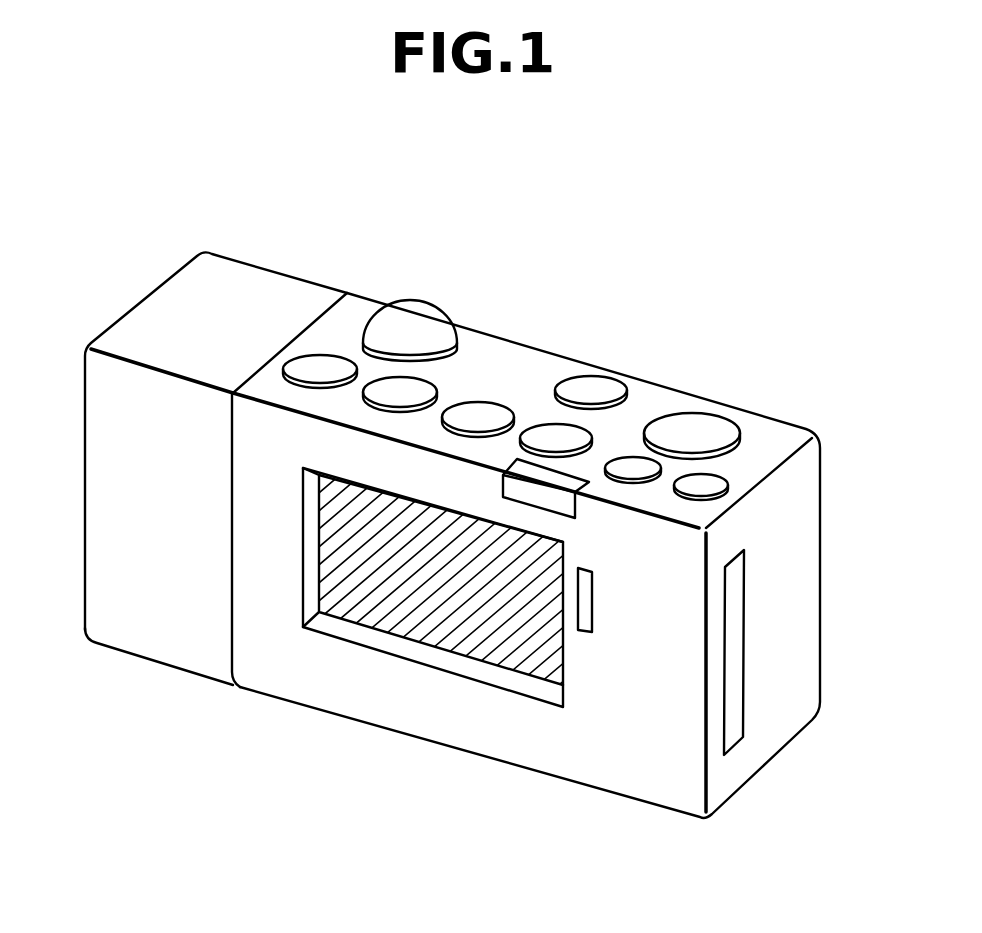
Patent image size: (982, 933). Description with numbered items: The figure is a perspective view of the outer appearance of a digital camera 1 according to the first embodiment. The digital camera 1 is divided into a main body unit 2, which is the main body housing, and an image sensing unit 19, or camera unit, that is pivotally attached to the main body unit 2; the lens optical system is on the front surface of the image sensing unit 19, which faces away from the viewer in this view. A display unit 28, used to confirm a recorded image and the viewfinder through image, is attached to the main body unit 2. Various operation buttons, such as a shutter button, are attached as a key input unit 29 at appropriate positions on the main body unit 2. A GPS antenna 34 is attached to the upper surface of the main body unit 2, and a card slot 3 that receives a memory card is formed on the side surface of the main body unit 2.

The digital camera 1 is at (456, 570).
The main body unit 2 is at (564, 570).
The card slot 3 is at (745, 684).
The image sensing unit 19 is at (60, 473).
The display unit 28 is at (428, 597).
The key input unit 29 is at (555, 354).
The GPS antenna 34 is at (410, 284).